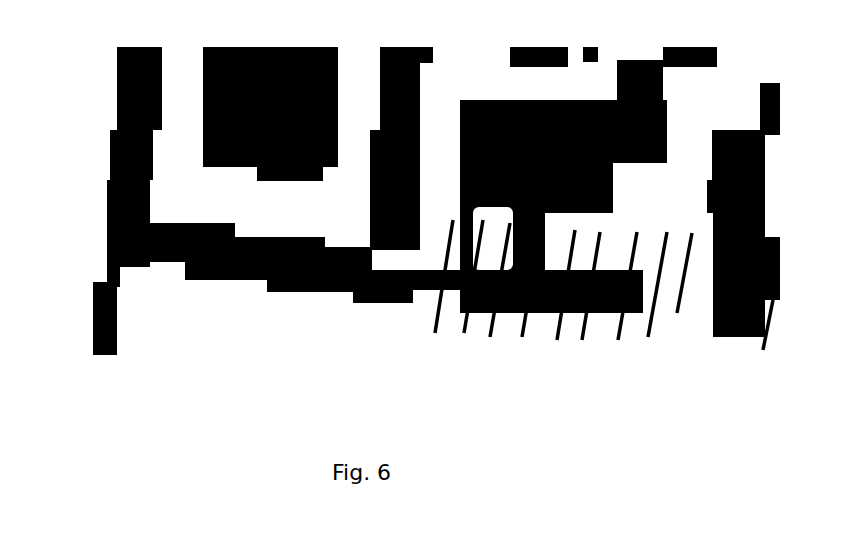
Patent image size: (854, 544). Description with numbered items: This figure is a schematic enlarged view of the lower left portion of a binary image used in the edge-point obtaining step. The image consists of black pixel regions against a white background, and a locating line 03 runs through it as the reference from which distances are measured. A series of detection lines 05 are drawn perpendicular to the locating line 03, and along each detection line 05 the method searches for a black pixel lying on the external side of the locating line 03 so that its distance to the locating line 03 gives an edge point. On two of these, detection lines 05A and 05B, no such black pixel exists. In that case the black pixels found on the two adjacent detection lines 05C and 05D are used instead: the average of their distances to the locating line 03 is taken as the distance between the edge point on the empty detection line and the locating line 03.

The locating line 03 is at (110, 243).
The detection line 05 is at (420, 337).
The detection line 05A is at (637, 296).
The detection line 05B is at (669, 285).
The detection line 05C is at (600, 294).
The detection line 05D is at (697, 297).